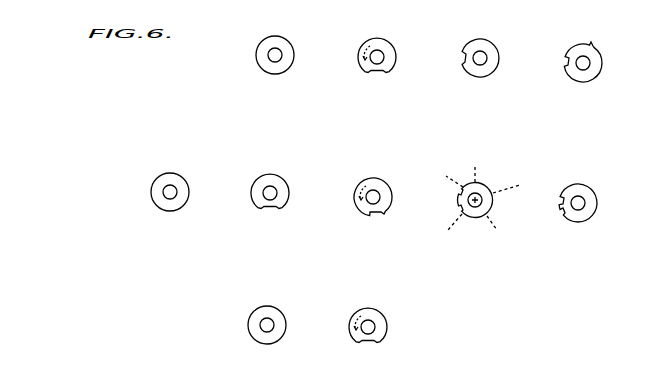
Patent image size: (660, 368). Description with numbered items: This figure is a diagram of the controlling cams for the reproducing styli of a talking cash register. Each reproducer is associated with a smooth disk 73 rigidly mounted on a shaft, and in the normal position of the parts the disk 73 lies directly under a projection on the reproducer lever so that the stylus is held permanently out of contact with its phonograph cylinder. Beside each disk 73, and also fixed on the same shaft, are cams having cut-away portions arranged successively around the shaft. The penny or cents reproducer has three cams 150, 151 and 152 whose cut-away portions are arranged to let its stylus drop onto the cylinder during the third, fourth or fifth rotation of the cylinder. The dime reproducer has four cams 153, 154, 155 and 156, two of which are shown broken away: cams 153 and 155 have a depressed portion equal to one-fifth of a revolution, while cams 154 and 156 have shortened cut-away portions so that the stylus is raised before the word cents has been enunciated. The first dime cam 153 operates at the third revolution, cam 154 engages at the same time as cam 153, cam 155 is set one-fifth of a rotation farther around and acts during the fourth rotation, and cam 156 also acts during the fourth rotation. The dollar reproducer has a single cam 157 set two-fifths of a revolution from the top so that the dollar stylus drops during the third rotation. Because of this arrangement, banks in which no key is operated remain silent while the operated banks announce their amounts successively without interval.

The smooth disk 73 is at (283, 47).
The penny reproducer cam 150 is at (410, 35).
The penny reproducer cam 151 is at (512, 34).
The penny reproducer cam 152 is at (625, 38).
The dime reproducer cam 153 is at (306, 174).
The dime reproducer cam 154 is at (414, 174).
The dime reproducer cam 155 is at (520, 174).
The dime reproducer cam 156 is at (626, 178).
The dollar reproducer cam 157 is at (422, 305).